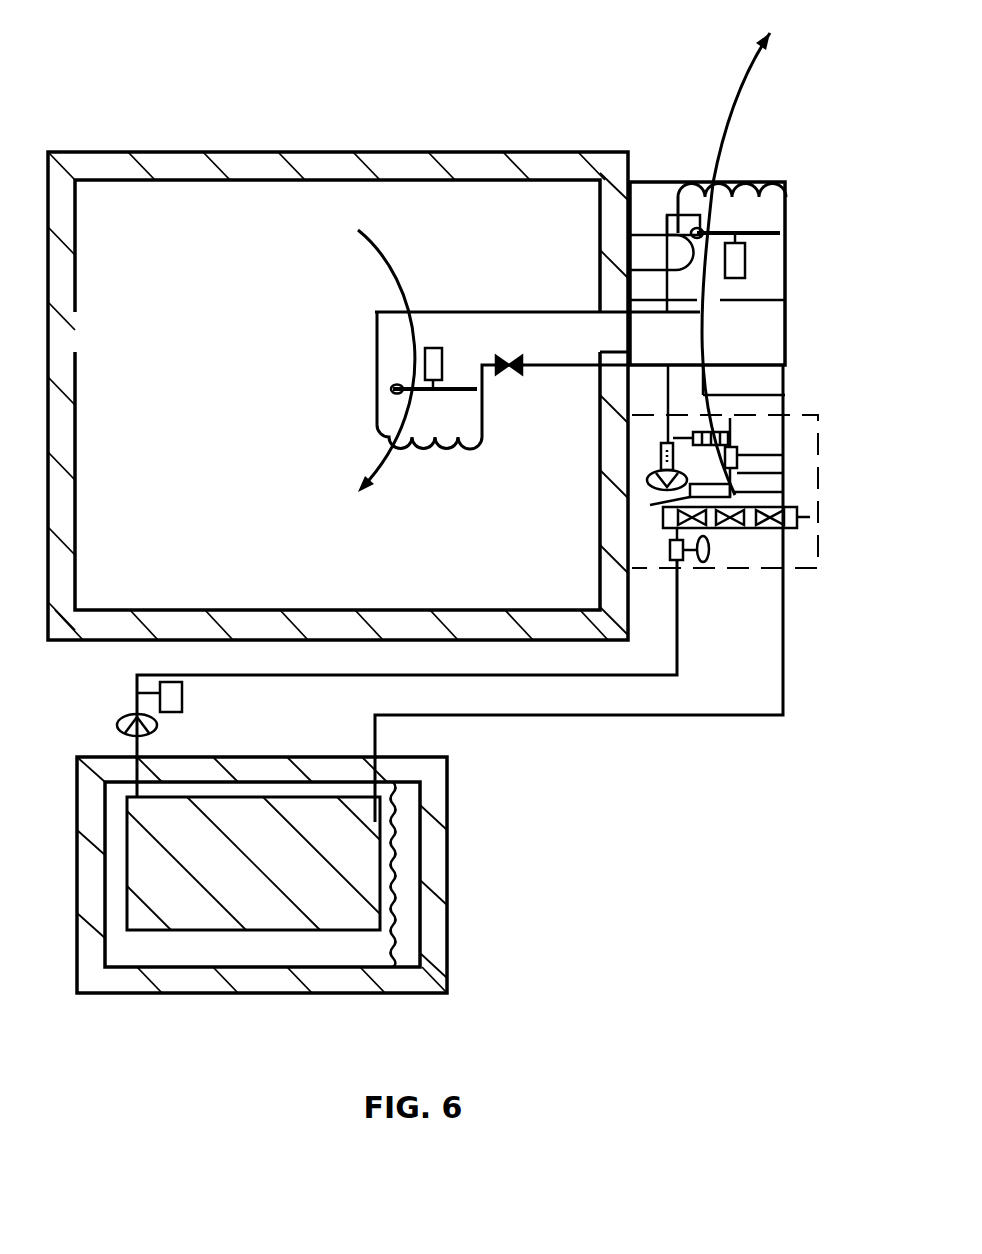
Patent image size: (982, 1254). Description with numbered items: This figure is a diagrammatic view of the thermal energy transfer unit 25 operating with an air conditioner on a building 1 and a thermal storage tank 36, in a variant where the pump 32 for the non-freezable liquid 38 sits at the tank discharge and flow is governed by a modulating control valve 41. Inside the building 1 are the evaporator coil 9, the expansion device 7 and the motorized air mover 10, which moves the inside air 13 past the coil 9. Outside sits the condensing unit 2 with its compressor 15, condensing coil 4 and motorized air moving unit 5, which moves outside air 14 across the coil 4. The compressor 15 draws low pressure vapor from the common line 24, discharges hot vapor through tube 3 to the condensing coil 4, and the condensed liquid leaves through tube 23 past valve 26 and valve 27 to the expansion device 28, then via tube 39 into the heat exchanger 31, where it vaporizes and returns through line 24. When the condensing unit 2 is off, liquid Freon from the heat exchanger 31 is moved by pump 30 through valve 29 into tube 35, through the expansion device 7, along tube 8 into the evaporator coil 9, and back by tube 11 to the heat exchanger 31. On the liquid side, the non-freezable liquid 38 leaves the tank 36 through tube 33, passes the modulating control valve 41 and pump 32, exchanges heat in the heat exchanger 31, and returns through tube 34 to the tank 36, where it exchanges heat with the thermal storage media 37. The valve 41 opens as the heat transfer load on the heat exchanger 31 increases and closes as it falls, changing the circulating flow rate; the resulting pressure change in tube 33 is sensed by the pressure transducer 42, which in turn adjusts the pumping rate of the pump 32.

The building 1 is at (335, 155).
The condensing unit 2 is at (648, 200).
The tube 3 is at (667, 215).
The condensing coil 4 is at (760, 183).
The motorized air moving unit 5 is at (770, 230).
The expansion device 7 is at (510, 375).
The tube 8 is at (482, 387).
The evaporator coil 9 is at (473, 440).
The motorized air mover 10 is at (437, 348).
The tube 11 is at (533, 312).
The inside air 13 is at (400, 300).
The outside air 14 is at (753, 60).
The compressor 15 is at (638, 233).
The tube 23 is at (790, 300).
The common line 24 is at (722, 437).
The thermal energy transfer unit 25 is at (737, 456).
The valve 26 is at (762, 473).
The valve 27 is at (674, 458).
The expansion device 28 is at (680, 478).
The valve 29 is at (740, 490).
The pump 30 is at (745, 510).
The heat exchanger 31 is at (810, 517).
The pump 32 is at (157, 725).
The tube 33 is at (680, 592).
The tube 34 is at (785, 643).
The tube 35 is at (725, 467).
The thermal storage tank 36 is at (440, 780).
The thermal storage media 37 is at (340, 865).
The non-freezable liquid 38 is at (358, 948).
The tube 39 is at (647, 474).
The modulating control valve 41 is at (710, 549).
The pressure transducer 42 is at (182, 700).